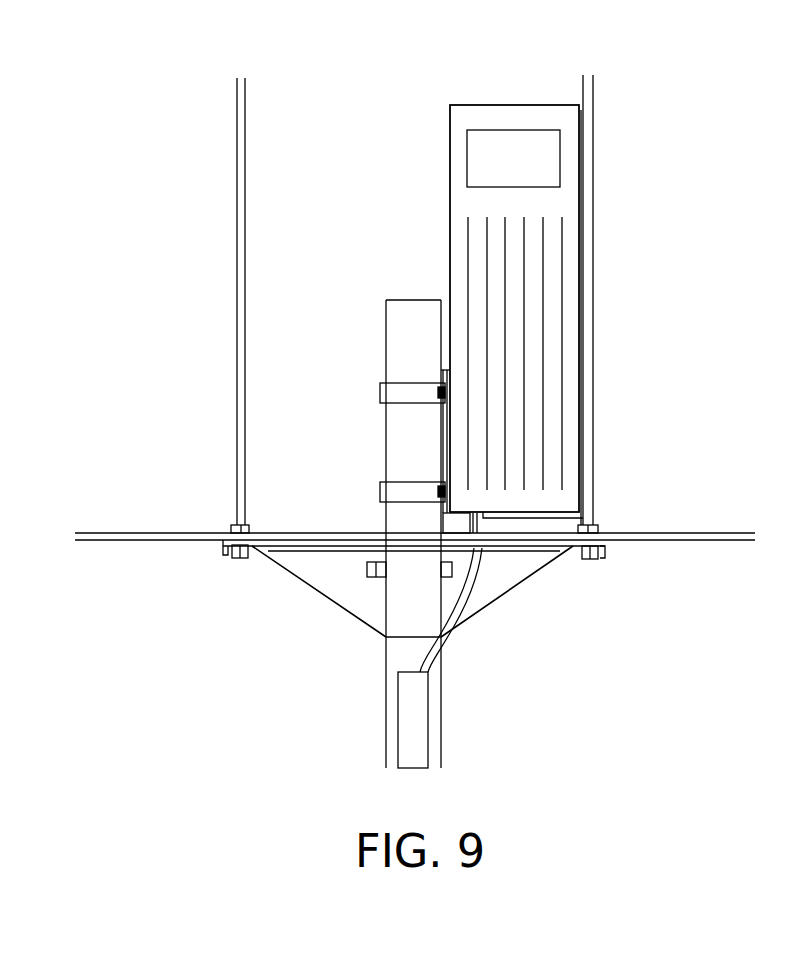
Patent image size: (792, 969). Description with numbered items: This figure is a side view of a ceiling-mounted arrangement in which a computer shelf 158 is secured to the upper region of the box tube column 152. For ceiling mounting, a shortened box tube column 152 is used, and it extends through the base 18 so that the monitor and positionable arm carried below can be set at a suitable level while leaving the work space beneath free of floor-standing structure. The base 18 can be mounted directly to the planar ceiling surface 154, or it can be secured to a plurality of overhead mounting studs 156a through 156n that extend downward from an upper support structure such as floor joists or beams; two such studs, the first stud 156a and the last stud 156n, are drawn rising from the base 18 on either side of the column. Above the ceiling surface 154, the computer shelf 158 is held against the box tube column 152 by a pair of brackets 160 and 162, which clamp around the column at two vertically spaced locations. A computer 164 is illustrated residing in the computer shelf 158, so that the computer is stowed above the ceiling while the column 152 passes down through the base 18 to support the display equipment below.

The base 18 is at (414, 606).
The box tube column 152 is at (452, 534).
The ceiling surface 154 is at (416, 551).
The overhead mounting stud 156a is at (196, 305).
The overhead mounting stud 156n is at (624, 304).
The computer shelf 158 is at (573, 317).
The bracket 160 is at (376, 400).
The bracket 162 is at (371, 498).
The computer 164 is at (483, 297).